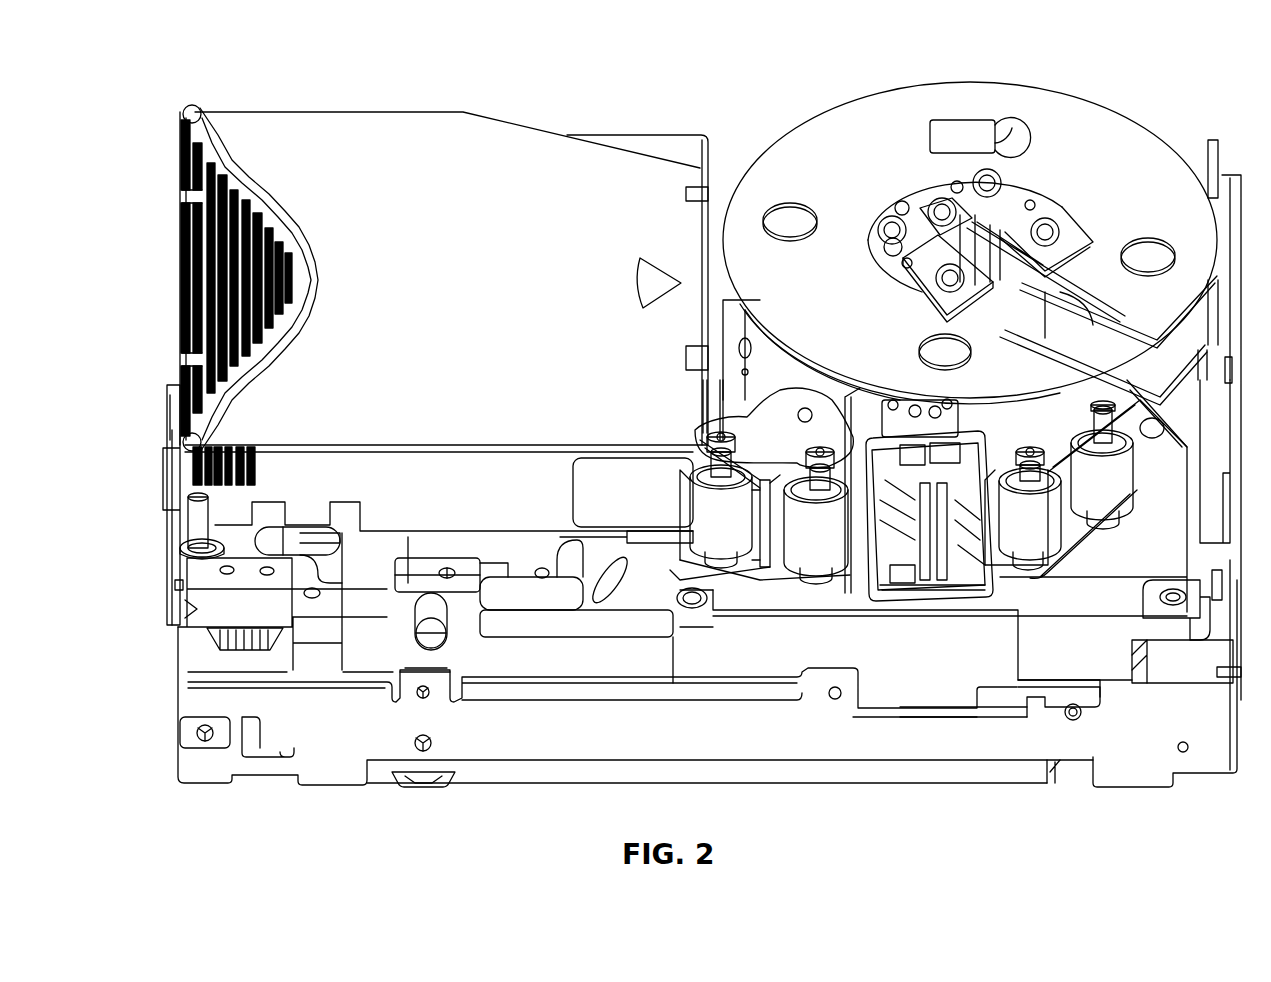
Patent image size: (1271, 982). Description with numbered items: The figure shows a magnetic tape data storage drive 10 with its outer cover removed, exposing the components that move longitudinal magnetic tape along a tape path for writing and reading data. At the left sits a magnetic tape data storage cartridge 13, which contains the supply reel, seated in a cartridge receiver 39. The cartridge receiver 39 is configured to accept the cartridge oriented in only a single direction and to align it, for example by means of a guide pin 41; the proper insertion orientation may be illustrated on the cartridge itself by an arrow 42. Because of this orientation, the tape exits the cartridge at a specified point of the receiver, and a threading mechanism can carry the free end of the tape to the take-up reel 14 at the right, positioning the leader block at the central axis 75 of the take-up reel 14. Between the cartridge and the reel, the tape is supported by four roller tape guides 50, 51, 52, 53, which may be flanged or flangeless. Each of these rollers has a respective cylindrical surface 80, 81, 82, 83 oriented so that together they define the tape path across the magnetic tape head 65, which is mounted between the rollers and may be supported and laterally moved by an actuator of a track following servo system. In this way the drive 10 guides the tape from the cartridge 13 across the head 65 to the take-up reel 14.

The magnetic tape data storage drive 10 is at (752, 61).
The magnetic tape data storage cartridge 13 is at (362, 108).
The take-up reel 14 is at (1100, 102).
The cartridge receiver 39 is at (160, 469).
The guide pin 41 is at (183, 525).
The arrow 42 is at (664, 258).
The roller tape guide 50 is at (695, 500).
The roller tape guide 51 is at (1112, 484).
The roller tape guide 52 is at (806, 537).
The roller tape guide 53 is at (1018, 528).
The tape head 65 is at (940, 580).
The central axis 75 is at (900, 283).
The cylindrical surface 80 is at (690, 520).
The cylindrical surface 81 is at (1122, 492).
The cylindrical surface 82 is at (790, 514).
The cylindrical surface 83 is at (1050, 520).